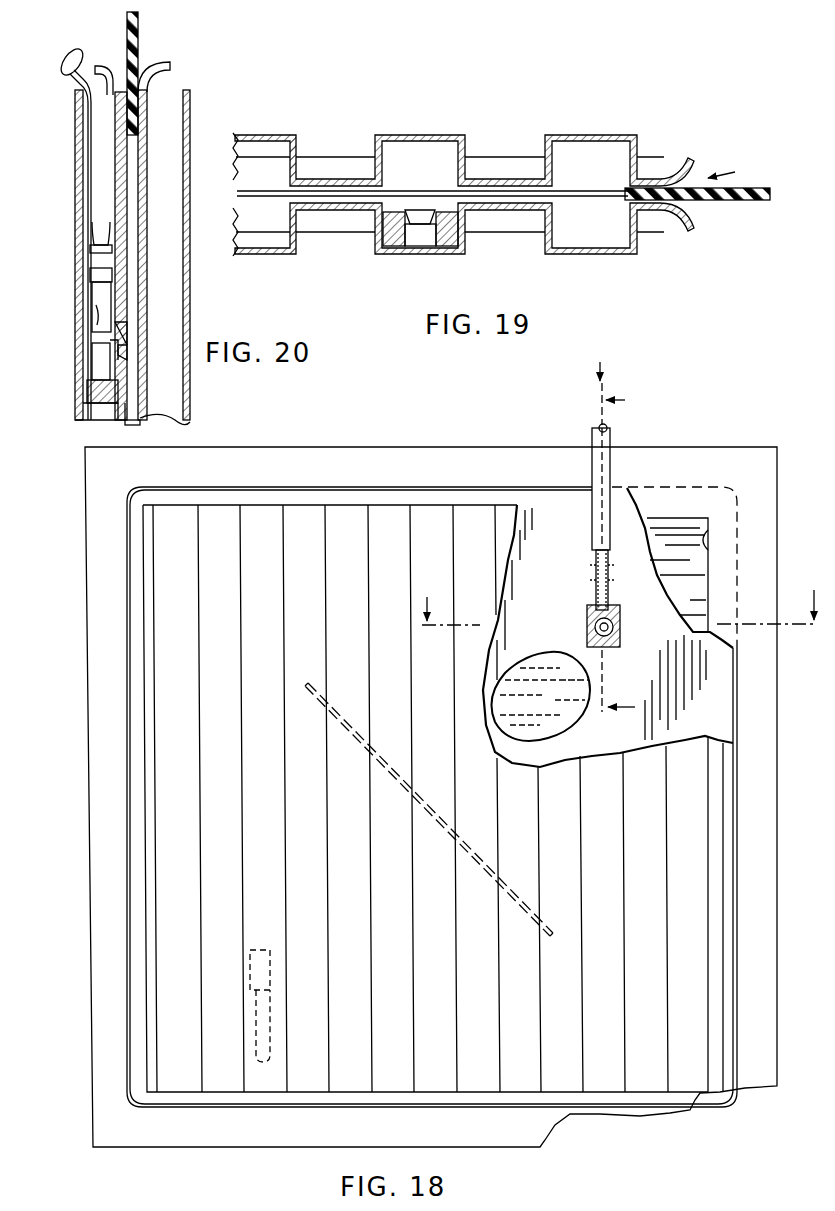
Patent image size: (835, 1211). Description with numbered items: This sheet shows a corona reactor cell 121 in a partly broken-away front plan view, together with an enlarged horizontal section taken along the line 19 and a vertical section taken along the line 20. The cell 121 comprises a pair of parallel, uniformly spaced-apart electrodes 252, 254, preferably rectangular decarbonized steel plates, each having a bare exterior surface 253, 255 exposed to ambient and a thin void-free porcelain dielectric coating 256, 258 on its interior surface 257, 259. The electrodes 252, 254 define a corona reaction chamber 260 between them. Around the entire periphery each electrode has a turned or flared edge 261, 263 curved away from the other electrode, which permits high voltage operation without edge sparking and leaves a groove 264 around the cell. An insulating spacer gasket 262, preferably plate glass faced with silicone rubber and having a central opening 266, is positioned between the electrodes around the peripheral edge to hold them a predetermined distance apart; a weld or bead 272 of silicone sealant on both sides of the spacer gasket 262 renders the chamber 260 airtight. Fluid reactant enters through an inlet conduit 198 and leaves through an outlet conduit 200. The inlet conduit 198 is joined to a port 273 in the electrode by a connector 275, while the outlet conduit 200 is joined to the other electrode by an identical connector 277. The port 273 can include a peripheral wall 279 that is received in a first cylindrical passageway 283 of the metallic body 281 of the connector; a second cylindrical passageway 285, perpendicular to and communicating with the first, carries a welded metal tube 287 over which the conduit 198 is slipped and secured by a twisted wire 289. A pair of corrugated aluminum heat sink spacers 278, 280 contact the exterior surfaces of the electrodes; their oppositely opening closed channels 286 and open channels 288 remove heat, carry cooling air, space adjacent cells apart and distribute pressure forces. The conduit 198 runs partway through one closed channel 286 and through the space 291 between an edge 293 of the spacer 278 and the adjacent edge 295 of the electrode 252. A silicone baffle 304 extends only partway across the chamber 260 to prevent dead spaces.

In FIG. 18, the corona reactor cell 121 is at (386, 442).
In FIG. 20, the inlet conduit 198 is at (93, 125).
In FIG. 18, the inlet conduit 198 is at (597, 512).
In FIG. 18, the outlet conduit 200 is at (272, 1050).
In FIG. 20, the electrode 252 is at (105, 418).
In FIG. 19, the electrode 252 is at (548, 245).
In FIG. 18, the electrode 252 is at (545, 505).
In FIG. 19, the bare exterior surface 253 is at (270, 212).
In FIG. 20, the electrode 254 is at (190, 422).
In FIG. 19, the electrode 254 is at (540, 175).
In FIG. 18, the electrode 254 is at (684, 520).
In FIG. 19, the bare exterior surface 255 is at (270, 178).
In FIG. 19, the dielectric coating 256 is at (684, 230).
In FIG. 19, the interior surface 257 is at (690, 222).
In FIG. 19, the dielectric coating 258 is at (690, 162).
In FIG. 19, the interior surface 259 is at (692, 165).
In FIG. 20, the corona reaction chamber 260 is at (132, 422).
In FIG. 19, the corona reaction chamber 260 is at (355, 192).
In FIG. 18, the corona reaction chamber 260 is at (556, 710).
In FIG. 19, the turned edge 261 is at (668, 217).
In FIG. 18, the turned edge 261 is at (738, 852).
In FIG. 20, the spacer gasket 262 is at (140, 52).
In FIG. 19, the spacer gasket 262 is at (748, 200).
In FIG. 18, the spacer gasket 262 is at (770, 468).
In FIG. 19, the turned edge 263 is at (672, 172).
In FIG. 19, the groove 264 is at (750, 169).
In FIG. 18, the central opening 266 is at (712, 533).
In FIG. 19, the weld or bead 272 is at (690, 175).
In FIG. 20, the port 273 is at (122, 352).
In FIG. 19, the port 273 is at (430, 225).
In FIG. 18, the port 273 is at (617, 632).
In FIG. 20, the connector 275 is at (95, 380).
In FIG. 19, the connector 275 is at (462, 248).
In FIG. 18, the connector 275 is at (588, 620).
In FIG. 18, the connector 277 is at (262, 948).
In FIG. 20, the heat sink spacer 278 is at (76, 406).
In FIG. 19, the heat sink spacer 278 is at (585, 255).
In FIG. 18, the heat sink spacer 278 is at (160, 770).
In FIG. 20, the peripheral wall 279 is at (122, 335).
In FIG. 19, the peripheral wall 279 is at (383, 255).
In FIG. 20, the heat sink spacer 280 is at (190, 388).
In FIG. 19, the heat sink spacer 280 is at (575, 135).
In FIG. 20, the metallic body 281 is at (88, 392).
In FIG. 20, the first cylindrical passageway 283 is at (95, 355).
In FIG. 20, the second cylindrical passageway 285 is at (96, 318).
In FIG. 19, the closed channel 286 is at (420, 160).
In FIG. 20, the tube 287 is at (94, 292).
In FIG. 18, the tube 287 is at (612, 582).
In FIG. 19, the open channel 288 is at (335, 157).
In FIG. 18, the wire 289 is at (595, 562).
In FIG. 20, the space 291 is at (66, 55).
In FIG. 20, the edge 293 is at (78, 82).
In FIG. 20, the edge 295 is at (98, 70).
In FIG. 19, the silicone baffle 304 is at (300, 198).
In FIG. 18, the silicone baffle 304 is at (395, 778).
In FIG. 18, the section line 19— 19 is at (618, 599).
In FIG. 18, the section line 20— 20 is at (632, 539).